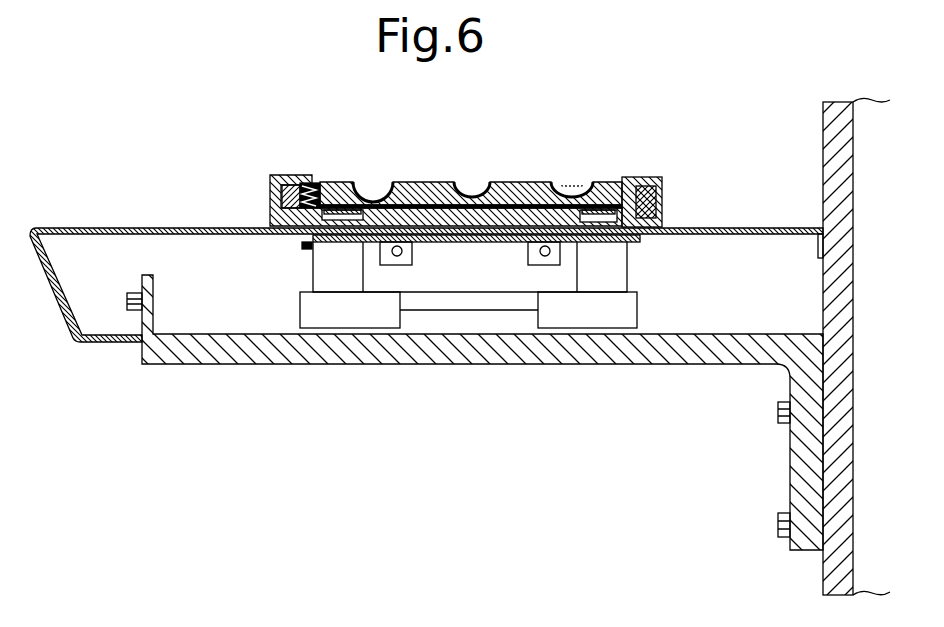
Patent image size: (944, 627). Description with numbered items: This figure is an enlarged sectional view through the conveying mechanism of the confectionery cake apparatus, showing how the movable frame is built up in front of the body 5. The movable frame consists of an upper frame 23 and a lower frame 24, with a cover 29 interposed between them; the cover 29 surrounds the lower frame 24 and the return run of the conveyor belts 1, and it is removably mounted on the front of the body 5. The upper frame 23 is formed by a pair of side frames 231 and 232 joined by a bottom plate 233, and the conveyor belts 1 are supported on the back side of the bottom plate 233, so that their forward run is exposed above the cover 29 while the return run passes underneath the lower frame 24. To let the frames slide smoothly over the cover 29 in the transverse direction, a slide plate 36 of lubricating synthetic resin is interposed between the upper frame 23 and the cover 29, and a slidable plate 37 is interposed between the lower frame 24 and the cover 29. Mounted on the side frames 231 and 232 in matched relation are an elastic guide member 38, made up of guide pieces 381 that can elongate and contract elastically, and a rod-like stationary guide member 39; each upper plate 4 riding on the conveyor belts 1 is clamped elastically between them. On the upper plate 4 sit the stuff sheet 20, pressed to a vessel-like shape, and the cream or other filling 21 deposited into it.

The conveyor belt 1 is at (330, 243).
The upper plate 4 is at (505, 185).
The body 5 is at (827, 152).
The stuff sheet 20 is at (372, 183).
The filling 21 is at (570, 187).
The upper frame 23 is at (637, 178).
The lower frame 24 is at (485, 322).
The cover 29 is at (127, 228).
The slide plate 36 is at (285, 237).
The slidable plate 37 is at (445, 240).
The elastic guide member 38 is at (268, 198).
The stationary guide member 39 is at (660, 217).
The side frame 231 is at (658, 200).
The side frame 232 is at (282, 173).
The bottom plate 233 is at (410, 187).
The guide piece 381 is at (328, 183).